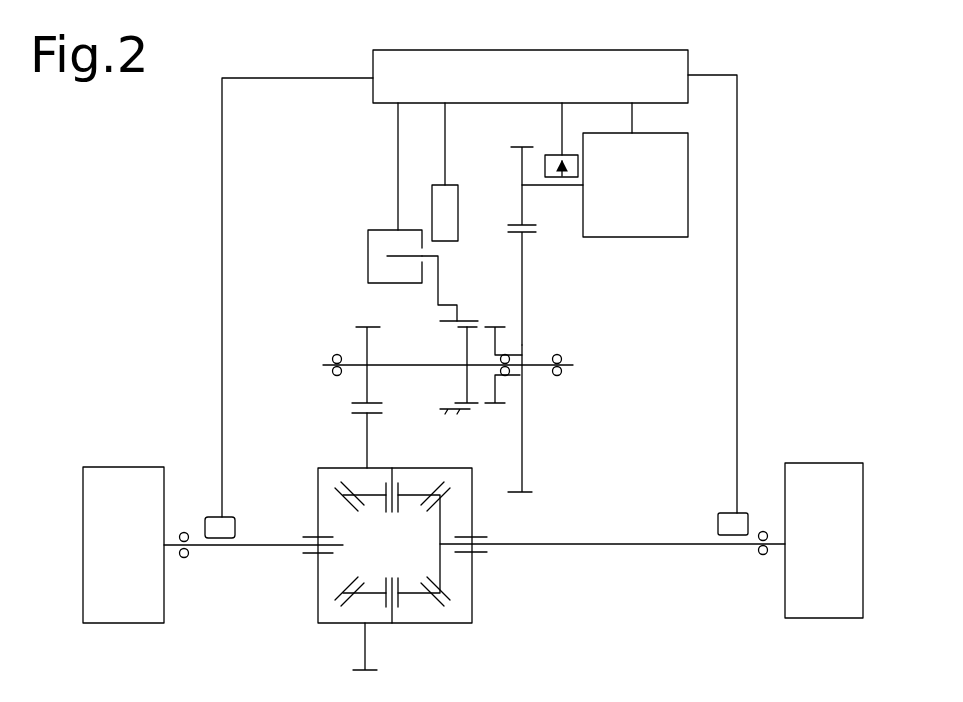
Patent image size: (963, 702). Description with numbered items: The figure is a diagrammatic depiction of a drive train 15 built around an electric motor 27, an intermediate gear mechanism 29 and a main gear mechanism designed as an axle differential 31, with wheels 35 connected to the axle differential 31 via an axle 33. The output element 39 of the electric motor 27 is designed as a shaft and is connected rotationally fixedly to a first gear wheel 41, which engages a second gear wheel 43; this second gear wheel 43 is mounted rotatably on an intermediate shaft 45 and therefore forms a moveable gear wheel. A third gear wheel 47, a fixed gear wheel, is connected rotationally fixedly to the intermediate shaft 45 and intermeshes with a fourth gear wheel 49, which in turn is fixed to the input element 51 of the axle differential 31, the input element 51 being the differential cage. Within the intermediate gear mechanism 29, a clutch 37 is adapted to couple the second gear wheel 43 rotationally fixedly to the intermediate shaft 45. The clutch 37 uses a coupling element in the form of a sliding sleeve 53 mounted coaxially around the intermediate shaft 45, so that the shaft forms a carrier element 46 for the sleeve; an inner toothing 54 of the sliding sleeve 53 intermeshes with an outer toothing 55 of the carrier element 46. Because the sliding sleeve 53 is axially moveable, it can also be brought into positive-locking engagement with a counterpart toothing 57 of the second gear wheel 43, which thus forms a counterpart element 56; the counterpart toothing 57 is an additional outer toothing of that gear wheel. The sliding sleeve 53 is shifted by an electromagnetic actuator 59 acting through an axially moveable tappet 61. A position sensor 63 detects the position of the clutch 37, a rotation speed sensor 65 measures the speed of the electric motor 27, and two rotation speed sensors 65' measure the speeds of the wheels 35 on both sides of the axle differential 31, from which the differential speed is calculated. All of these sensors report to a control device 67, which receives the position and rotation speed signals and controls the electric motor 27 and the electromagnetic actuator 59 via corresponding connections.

The drive train 15 is at (776, 120).
The electric motor 27 is at (666, 213).
The intermediate gear mechanism 29 is at (601, 326).
The axle differential 31 is at (479, 578).
The axle 33 is at (260, 548).
The wheels 35 is at (126, 577).
The clutch 37 is at (399, 308).
The output element 39 is at (536, 190).
The first gear wheel 41 is at (517, 167).
The second gear wheel 43 is at (529, 430).
The intermediate shaft 45 is at (398, 370).
The carrier element 46 is at (464, 383).
The third gear wheel 47 is at (360, 383).
The fourth gear wheel 49 is at (360, 437).
The input element 51 is at (351, 466).
The sliding sleeve 53 is at (459, 302).
The inner toothing 54 is at (446, 326).
The outer toothing 55 is at (461, 335).
The counterpart element 56 is at (498, 385).
The counterpart toothing 57 is at (492, 322).
The electromagnetic actuator 59 is at (367, 256).
The tappet 61 is at (403, 252).
The position sensor 63 is at (440, 195).
The rotation speed sensor 65 is at (559, 221).
The rotation speed sensors 65' is at (476, 306).
The control device 67 is at (395, 70).